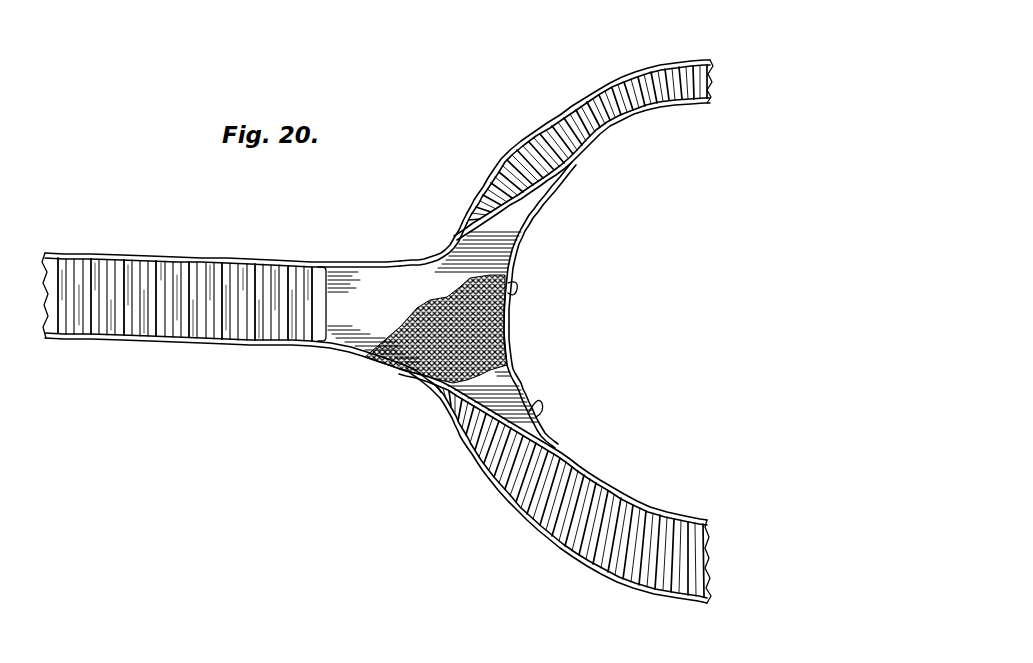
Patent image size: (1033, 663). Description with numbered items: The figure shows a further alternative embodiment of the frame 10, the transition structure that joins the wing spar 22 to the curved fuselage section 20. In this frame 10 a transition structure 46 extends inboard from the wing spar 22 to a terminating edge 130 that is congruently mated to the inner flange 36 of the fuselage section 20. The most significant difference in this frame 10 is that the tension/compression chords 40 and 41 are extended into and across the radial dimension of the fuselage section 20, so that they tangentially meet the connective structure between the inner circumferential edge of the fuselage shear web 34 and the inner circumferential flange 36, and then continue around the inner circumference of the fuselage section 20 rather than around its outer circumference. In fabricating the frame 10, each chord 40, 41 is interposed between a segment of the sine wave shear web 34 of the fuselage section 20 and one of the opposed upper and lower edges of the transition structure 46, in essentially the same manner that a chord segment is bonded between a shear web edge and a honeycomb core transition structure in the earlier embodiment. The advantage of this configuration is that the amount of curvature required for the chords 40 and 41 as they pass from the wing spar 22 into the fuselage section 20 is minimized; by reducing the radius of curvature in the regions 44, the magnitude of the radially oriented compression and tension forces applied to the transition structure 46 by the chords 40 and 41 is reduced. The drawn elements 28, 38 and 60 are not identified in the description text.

The frame 10 is at (421, 180).
The fuselage section 20 is at (641, 71).
The wing spar 22 is at (163, 254).
The reinforcing ribs 28 is at (275, 282).
The fuselage shear web 34 is at (512, 167).
The inner flange 36 is at (500, 467).
The first branch 38 is at (539, 127).
The tension/compression chord 40 is at (455, 243).
The tension/compression chord 41 is at (410, 378).
The regions 44 is at (418, 262).
The transition structure 46 is at (342, 283).
The crotch web 60 is at (432, 393).
The terminating edge 130 is at (468, 279).